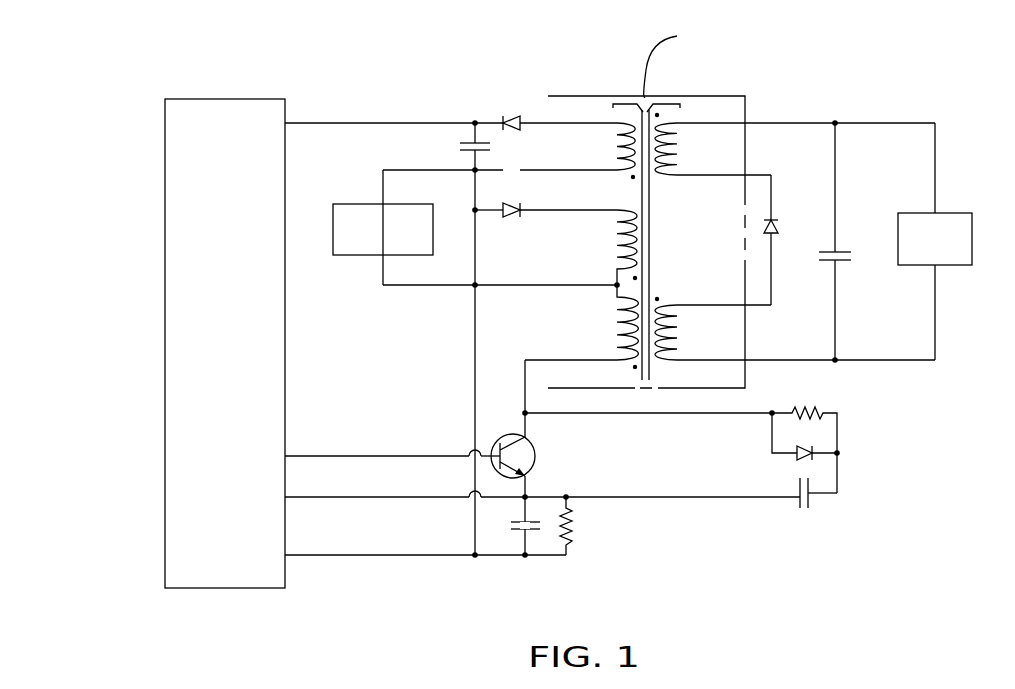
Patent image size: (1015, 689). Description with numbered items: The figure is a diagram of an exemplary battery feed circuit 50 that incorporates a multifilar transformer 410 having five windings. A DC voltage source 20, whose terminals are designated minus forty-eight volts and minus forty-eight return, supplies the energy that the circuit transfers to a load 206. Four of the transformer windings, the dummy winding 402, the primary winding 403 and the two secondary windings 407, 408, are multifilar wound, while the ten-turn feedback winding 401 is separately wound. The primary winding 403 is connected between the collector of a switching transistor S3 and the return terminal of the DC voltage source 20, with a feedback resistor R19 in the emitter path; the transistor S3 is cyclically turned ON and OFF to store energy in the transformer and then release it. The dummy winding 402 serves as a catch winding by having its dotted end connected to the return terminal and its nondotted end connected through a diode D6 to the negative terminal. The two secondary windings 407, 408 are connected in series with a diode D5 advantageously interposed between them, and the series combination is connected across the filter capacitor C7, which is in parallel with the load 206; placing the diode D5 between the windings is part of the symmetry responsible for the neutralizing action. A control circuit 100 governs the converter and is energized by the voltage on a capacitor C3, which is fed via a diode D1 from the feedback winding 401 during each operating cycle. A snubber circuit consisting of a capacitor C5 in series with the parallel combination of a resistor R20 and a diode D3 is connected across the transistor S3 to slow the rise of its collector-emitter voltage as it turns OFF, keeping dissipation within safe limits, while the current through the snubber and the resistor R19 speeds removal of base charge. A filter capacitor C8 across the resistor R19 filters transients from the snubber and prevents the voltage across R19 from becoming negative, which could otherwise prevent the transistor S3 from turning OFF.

The battery feed circuit 50 is at (733, 632).
The control circuit 100 is at (228, 99).
The DC voltage source 20 is at (373, 256).
The multifilar transformer 410 is at (605, 96).
The feedback winding 401 is at (620, 123).
The dummy winding 402 is at (628, 210).
The primary winding 403 is at (630, 364).
The secondary winding 407 is at (662, 176).
The secondary winding 408 is at (664, 306).
The load 206 is at (950, 213).
The diode D1 is at (513, 111).
The capacitor C3 is at (489, 148).
The diode D6 is at (513, 198).
The diode D5 is at (785, 240).
The filter capacitor C7 is at (821, 257).
The switching transistor S3 is at (526, 494).
The filter capacitor C8 is at (511, 524).
The feedback resistor R19 is at (585, 526).
The resistor R20 is at (804, 440).
The diode D3 is at (804, 436).
The capacitor C5 is at (815, 503).